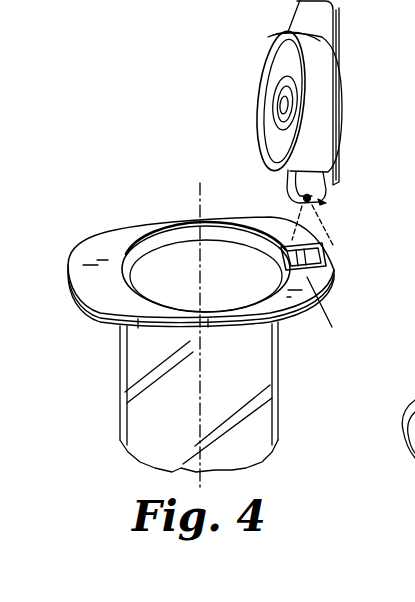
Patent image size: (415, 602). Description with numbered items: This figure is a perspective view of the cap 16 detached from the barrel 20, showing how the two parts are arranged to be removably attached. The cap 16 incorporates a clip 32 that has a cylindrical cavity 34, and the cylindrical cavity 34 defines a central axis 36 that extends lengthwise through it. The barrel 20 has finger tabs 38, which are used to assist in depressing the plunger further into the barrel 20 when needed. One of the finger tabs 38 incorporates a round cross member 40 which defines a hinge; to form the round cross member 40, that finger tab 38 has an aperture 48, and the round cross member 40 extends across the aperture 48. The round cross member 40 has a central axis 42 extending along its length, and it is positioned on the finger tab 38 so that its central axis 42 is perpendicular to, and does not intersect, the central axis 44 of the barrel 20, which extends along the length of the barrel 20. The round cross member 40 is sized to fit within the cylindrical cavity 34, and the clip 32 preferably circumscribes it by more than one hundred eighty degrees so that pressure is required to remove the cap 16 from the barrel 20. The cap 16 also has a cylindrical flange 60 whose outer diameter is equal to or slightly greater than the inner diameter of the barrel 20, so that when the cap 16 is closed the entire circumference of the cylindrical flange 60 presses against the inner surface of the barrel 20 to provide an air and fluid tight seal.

The cap 16 is at (321, 118).
The barrel 20 is at (202, 317).
The clip 32 is at (351, 216).
The cylindrical cavity 34 is at (292, 202).
The central axis 36 is at (334, 247).
The finger tabs 38 is at (96, 252).
The round cross member 40 is at (334, 267).
The central axis 42 is at (332, 318).
The central axis 44 is at (198, 197).
The aperture 48 is at (273, 222).
The cylindrical flange 60 is at (285, 33).